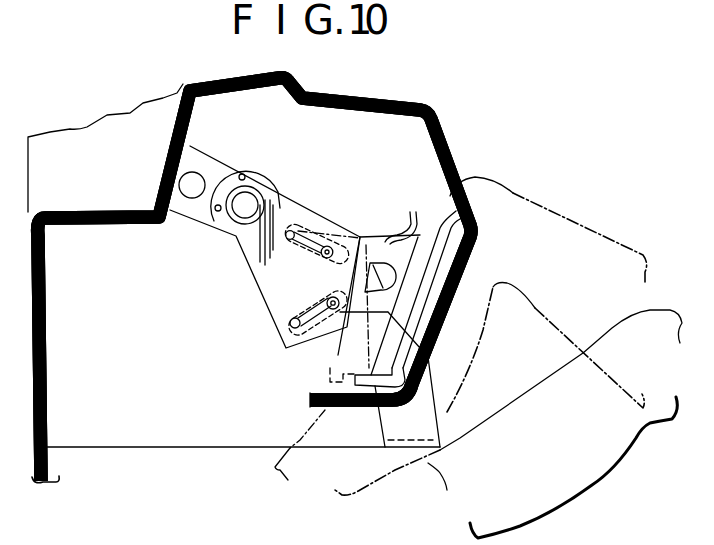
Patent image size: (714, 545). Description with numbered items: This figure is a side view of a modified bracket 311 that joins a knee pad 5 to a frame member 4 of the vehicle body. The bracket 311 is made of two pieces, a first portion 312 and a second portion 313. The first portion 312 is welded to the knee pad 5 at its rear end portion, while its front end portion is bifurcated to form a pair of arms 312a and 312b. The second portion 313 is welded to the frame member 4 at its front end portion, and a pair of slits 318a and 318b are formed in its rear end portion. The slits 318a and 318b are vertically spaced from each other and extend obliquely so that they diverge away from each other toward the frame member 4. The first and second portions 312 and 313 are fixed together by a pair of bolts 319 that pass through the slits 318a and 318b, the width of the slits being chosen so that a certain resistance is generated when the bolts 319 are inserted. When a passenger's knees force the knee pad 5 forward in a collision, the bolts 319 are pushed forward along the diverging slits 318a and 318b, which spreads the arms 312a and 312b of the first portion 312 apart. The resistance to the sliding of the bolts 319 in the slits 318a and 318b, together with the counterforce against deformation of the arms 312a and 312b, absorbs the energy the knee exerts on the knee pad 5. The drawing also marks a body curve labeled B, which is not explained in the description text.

The frame member 4 is at (237, 197).
The knee pad 5 is at (446, 278).
The bracket 311 is at (226, 275).
The first portion 312 is at (362, 331).
The arm 312a is at (383, 235).
The arm 312b is at (346, 329).
The second portion 313 is at (248, 240).
The slit 318a is at (293, 230).
The slit 318b is at (296, 315).
The bolts 319 is at (327, 246).
The body B is at (590, 490).